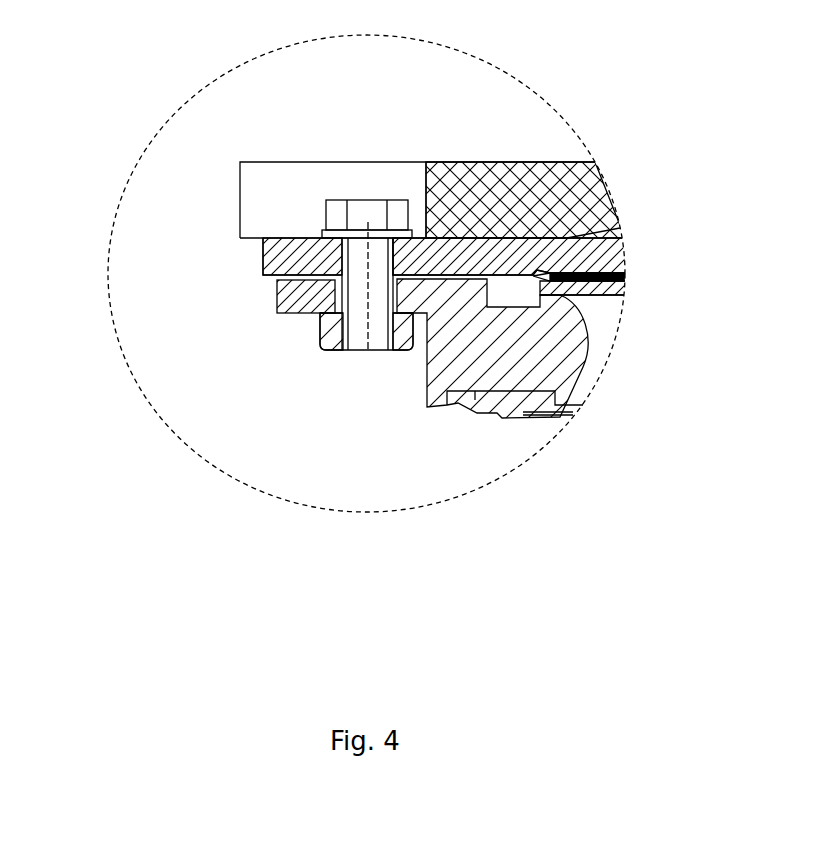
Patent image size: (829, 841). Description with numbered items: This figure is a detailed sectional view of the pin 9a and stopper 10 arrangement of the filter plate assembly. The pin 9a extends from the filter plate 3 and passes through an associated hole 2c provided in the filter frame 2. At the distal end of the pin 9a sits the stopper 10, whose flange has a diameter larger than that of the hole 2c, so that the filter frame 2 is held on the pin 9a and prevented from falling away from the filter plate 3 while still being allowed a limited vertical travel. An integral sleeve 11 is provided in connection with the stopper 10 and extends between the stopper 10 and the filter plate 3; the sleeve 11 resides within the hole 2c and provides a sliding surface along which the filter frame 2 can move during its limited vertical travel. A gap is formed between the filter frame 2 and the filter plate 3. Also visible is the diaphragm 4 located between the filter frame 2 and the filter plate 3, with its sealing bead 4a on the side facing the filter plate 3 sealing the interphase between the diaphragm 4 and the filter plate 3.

The filter frame 2 is at (584, 368).
The hole 2c is at (333, 291).
The filter plate 3 is at (610, 248).
The diaphragm 4 is at (627, 292).
The sealing bead 4a is at (540, 262).
The pin 9a is at (362, 248).
The stopper 10 is at (319, 337).
The sleeve 11 is at (389, 302).